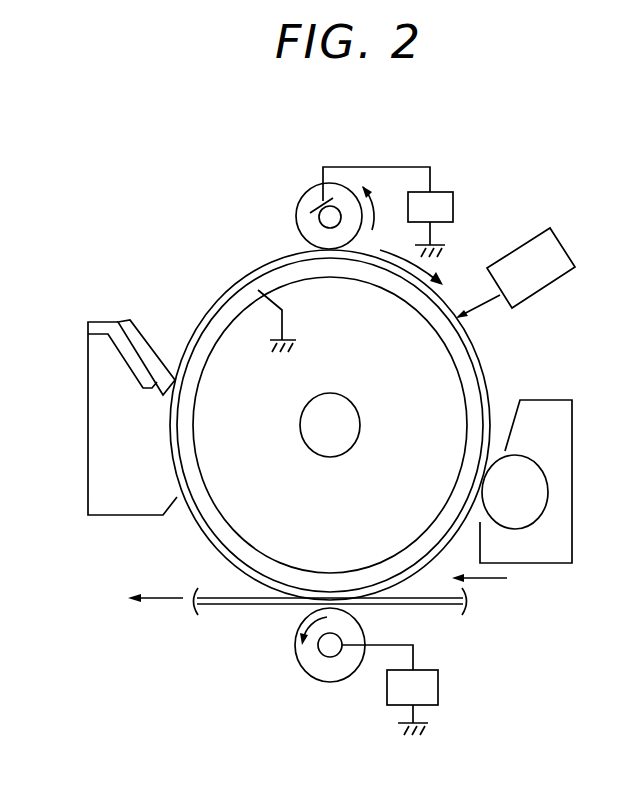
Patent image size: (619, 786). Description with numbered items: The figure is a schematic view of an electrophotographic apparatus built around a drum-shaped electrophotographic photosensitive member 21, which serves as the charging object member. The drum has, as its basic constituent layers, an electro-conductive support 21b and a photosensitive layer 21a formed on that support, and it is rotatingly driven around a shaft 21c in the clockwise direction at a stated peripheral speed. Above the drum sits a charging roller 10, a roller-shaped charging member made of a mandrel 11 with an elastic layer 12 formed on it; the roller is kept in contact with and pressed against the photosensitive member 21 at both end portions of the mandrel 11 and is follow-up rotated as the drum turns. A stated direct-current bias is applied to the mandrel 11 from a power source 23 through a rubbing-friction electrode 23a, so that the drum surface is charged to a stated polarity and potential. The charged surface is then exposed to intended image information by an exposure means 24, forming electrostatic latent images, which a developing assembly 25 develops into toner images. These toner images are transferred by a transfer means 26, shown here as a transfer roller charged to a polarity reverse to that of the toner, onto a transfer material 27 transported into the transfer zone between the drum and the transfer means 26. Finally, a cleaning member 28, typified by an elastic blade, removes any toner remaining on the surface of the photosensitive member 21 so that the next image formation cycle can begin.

The charging roller 10 is at (288, 191).
The mandrel 11 is at (293, 219).
The elastic layer 12 is at (302, 204).
The electrophotographic photosensitive member 21 is at (303, 419).
The photosensitive layer 21a is at (233, 293).
The electro-conductive support 21b is at (228, 310).
The shaft 21c is at (327, 451).
The power source 23 is at (388, 212).
The rubbing-friction electrode 23a is at (312, 217).
The exposure means 24 is at (515, 273).
The developing assembly 25 is at (540, 402).
The transfer means 26 is at (330, 673).
The transfer material 27 is at (215, 608).
The cleaning member 28 is at (95, 428).